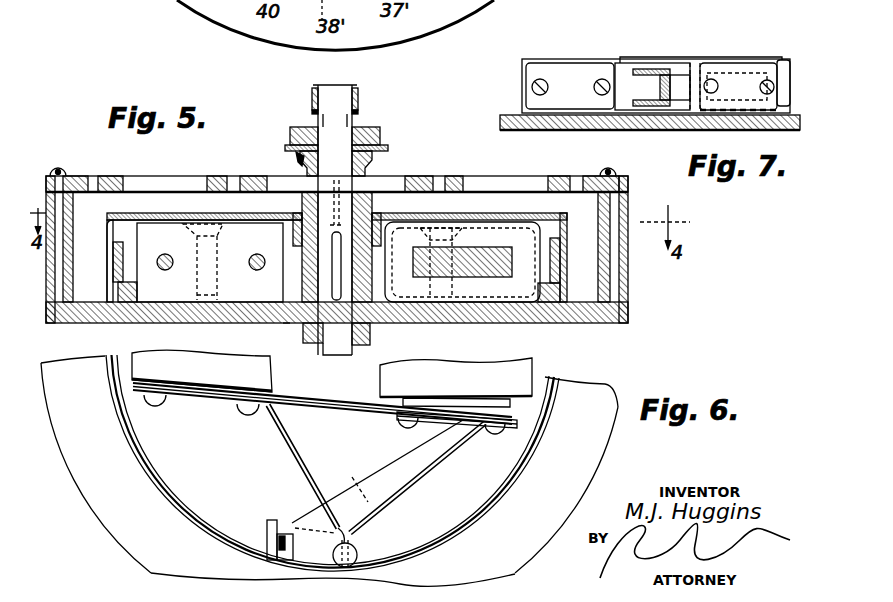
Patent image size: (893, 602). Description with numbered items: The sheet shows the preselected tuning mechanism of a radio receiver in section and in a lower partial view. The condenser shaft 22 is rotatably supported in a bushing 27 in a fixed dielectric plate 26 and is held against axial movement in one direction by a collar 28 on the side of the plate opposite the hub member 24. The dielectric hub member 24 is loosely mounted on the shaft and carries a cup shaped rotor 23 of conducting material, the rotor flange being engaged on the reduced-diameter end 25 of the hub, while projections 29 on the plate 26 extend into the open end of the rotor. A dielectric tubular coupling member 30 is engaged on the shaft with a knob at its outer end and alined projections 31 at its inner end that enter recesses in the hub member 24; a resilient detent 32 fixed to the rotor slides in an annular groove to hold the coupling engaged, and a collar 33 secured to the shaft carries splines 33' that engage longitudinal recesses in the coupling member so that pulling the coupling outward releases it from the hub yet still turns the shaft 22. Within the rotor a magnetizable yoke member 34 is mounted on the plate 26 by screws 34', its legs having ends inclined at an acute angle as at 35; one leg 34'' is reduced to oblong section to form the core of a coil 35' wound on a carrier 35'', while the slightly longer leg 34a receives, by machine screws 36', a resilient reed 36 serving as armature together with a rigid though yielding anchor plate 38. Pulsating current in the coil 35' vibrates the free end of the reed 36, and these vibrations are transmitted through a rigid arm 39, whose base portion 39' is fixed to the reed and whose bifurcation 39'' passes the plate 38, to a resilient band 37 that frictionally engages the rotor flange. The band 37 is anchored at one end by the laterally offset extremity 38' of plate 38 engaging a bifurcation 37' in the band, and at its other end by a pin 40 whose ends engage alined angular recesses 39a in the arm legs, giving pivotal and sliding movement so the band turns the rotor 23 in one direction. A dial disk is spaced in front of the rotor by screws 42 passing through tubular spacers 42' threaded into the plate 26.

In FIG. 5, the condenser shaft 22 is at (328, 343).
In FIG. 5, the cup shaped member 23 is at (625, 210).
In FIG. 6, the cup shaped member 23 is at (171, 507).
In FIG. 5, the hub member 24 is at (383, 323).
In FIG. 5, the end of reduced diameter 25 is at (387, 225).
In FIG. 5, the fixed plate 26 is at (580, 325).
In FIG. 6, the fixed plate 26 is at (329, 471).
In FIG. 7, the fixed plate 26 is at (653, 131).
In FIG. 5, the bushing 27 is at (288, 323).
In FIG. 5, the collar 28 is at (358, 345).
In FIG. 5, the projections 29 is at (140, 292).
In FIG. 5, the tubular member 30 is at (385, 134).
In FIG. 5, the alined projections 31 is at (335, 220).
In FIG. 5, the resilient detent 32 is at (297, 158).
In FIG. 5, the collar 33 is at (360, 100).
In FIG. 5, the splines 33' is at (381, 117).
In FIG. 5, the yoke member 34 is at (204, 247).
In FIG. 7, the yoke member 34 is at (701, 31).
In FIG. 5, the screws 34' is at (469, 205).
In FIG. 5, the leg 34'' is at (334, 247).
In FIG. 6, the leg 34'' is at (504, 385).
In FIG. 6, the leg 34a is at (202, 371).
In FIG. 6, the inclined ends of the legs 35 is at (456, 382).
In FIG. 5, the coil 35' is at (559, 246).
In FIG. 7, the coil 35' is at (782, 64).
In FIG. 6, the carrier 35'' is at (560, 365).
In FIG. 6, the reed 36 is at (377, 467).
In FIG. 5, the machine screws 36' is at (219, 262).
In FIG. 6, the machine screws 36' is at (324, 414).
In FIG. 7, the machine screws 36' is at (571, 86).
In FIG. 5, the band of resilient material 37 is at (210, 262).
In FIG. 6, the band of resilient material 37 is at (197, 475).
In FIG. 6, the bifurcation 37' is at (397, 531).
In FIG. 6, the plate 38 is at (322, 463).
In FIG. 7, the plate 38 is at (656, 65).
In FIG. 6, the offset extremity 38' is at (372, 528).
In FIG. 6, the rigid arm 39 is at (433, 473).
In FIG. 7, the rigid arm 39 is at (668, 65).
In FIG. 6, the base portion 39' is at (489, 448).
In FIG. 7, the base portion 39' is at (738, 68).
In FIG. 6, the bifurcation 39'' is at (324, 505).
In FIG. 7, the bifurcation 39'' is at (662, 59).
In FIG. 6, the angular recesses 39a is at (334, 551).
In FIG. 6, the pin 40 is at (275, 520).
In FIG. 5, the screws 42 is at (333, 160).
In FIG. 5, the tubular spacers 42' is at (371, 247).